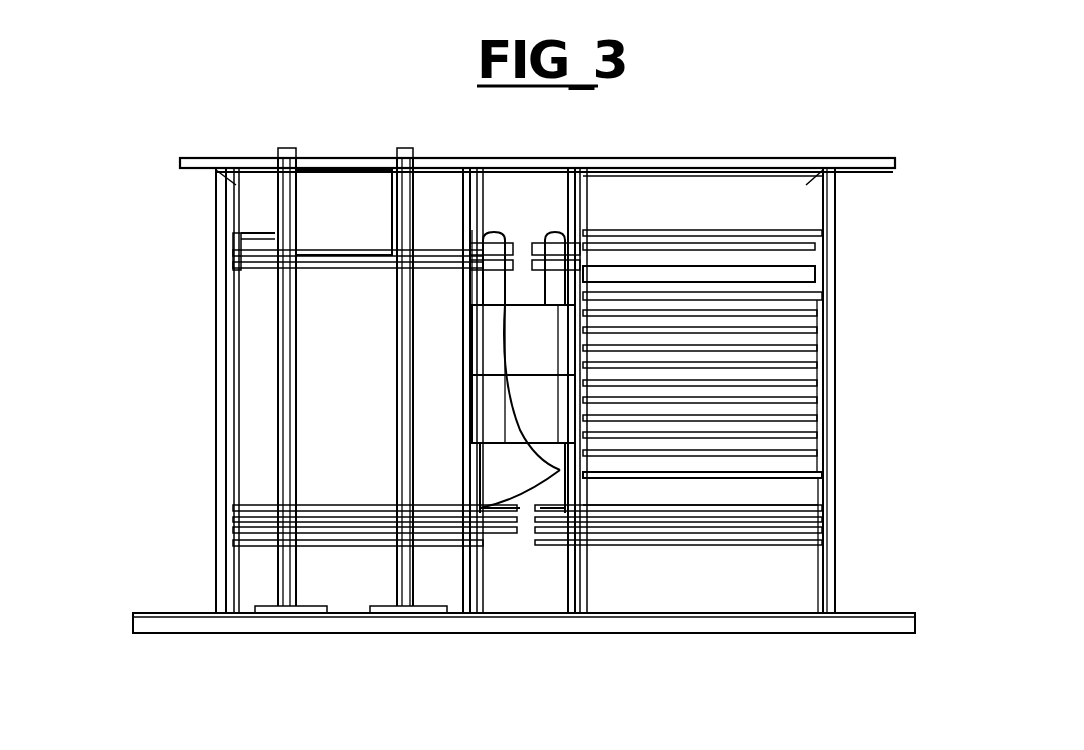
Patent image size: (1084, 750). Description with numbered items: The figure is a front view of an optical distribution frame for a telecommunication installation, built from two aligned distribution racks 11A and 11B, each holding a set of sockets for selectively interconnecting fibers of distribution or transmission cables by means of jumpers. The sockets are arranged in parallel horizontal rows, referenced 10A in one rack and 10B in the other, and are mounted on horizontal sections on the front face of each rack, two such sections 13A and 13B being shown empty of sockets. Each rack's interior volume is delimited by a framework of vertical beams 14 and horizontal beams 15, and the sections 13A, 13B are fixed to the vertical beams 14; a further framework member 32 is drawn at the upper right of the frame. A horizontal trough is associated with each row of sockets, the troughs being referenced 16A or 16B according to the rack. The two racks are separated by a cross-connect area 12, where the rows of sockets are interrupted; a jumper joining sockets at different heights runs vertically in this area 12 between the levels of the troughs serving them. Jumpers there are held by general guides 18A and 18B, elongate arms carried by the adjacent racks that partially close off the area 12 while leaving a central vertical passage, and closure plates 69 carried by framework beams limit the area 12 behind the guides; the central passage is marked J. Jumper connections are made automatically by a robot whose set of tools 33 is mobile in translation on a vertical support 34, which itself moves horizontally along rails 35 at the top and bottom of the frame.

The rails 35 is at (214, 166).
The horizontal beams 15 is at (225, 176).
The horizontal section 13A is at (258, 228).
The set of tools 33 is at (350, 200).
The general guide 18A is at (494, 235).
The cross-connect area 12 is at (523, 205).
The general guide 18B is at (552, 240).
The horizontal section 13B is at (700, 230).
The plate 32 is at (832, 158).
The rows of sockets 10B is at (825, 294).
The vertical beams 14 is at (238, 390).
The trough 16B is at (782, 468).
The distribution rack 11B is at (790, 548).
The distribution rack 11A is at (240, 320).
The vertical support 34 is at (398, 385).
The closure plates 69 is at (480, 352).
The rows of sockets 10A is at (245, 522).
The trough 16A is at (245, 545).
The junction J is at (562, 358).